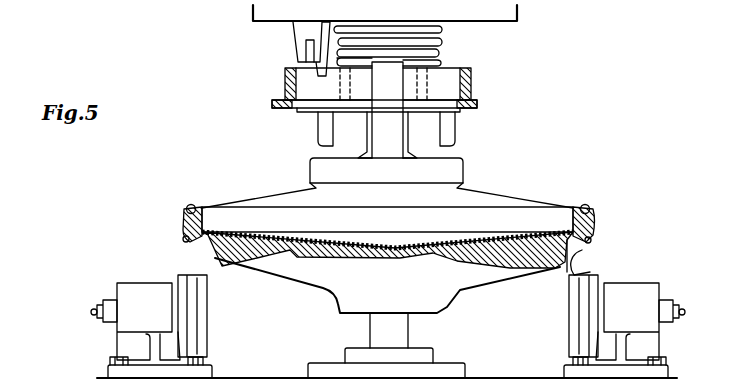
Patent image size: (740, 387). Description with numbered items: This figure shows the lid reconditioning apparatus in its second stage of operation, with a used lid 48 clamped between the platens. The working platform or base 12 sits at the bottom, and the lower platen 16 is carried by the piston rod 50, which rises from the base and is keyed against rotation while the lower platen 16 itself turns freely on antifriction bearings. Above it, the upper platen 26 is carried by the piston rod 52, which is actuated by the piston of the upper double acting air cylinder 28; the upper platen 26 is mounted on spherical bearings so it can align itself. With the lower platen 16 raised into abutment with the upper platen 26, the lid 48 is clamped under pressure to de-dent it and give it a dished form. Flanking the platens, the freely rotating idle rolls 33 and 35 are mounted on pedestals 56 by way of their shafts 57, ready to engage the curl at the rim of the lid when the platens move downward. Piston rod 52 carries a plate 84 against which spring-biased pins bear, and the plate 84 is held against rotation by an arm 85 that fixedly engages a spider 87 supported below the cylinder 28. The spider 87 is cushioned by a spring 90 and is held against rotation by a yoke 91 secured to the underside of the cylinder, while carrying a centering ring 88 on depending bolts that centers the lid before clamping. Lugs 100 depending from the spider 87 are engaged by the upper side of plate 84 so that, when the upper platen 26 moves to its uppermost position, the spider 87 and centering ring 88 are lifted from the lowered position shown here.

The working platform or base 12 is at (503, 346).
The lower platen 16 is at (387, 272).
The upper platen 26 is at (533, 217).
The actuating double acting cylinder 28 is at (520, 20).
The idle roll 33 is at (598, 266).
The idle roll 35 is at (200, 308).
The used lid 48 is at (250, 232).
The piston rod 50 is at (372, 326).
The piston rod 52 is at (366, 146).
The pedestal 56 is at (130, 345).
The shaft 57 is at (112, 300).
The plate 84 is at (462, 168).
The arm 85 is at (392, 84).
The spider 87 is at (462, 80).
The centering ring 88 is at (589, 206).
The spring 90 is at (348, 32).
The yoke 91 is at (302, 48).
The lug 100 is at (320, 126).